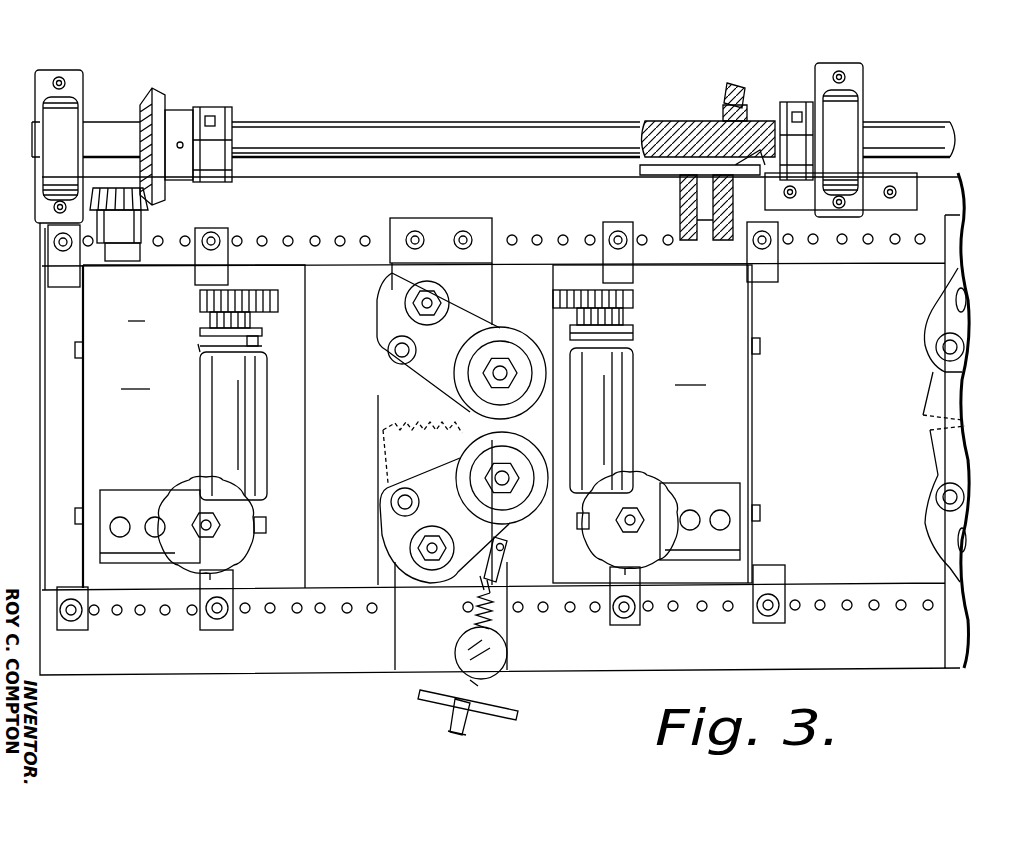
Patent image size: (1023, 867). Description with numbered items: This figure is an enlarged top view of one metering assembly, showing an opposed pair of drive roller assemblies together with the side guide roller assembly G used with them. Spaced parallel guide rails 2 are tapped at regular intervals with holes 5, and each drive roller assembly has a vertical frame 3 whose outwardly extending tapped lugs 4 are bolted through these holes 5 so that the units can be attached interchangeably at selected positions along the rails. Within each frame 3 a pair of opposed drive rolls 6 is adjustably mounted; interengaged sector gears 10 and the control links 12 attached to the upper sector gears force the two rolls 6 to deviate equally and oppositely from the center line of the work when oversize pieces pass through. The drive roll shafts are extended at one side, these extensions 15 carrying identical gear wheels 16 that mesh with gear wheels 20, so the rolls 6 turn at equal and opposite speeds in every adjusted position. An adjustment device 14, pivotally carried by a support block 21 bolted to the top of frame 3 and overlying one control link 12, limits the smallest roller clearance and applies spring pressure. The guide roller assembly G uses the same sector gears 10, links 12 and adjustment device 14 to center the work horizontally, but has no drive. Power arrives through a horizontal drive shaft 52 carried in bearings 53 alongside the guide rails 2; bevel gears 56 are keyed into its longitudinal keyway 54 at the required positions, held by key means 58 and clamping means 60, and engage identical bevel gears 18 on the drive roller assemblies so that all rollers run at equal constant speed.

The guide rails 2 is at (950, 192).
The vertical frame 3 is at (738, 308).
The tapped lugs 4 is at (212, 234).
The holes 5 is at (312, 236).
The drive rolls 6 is at (250, 416).
The sector gears 10 is at (76, 345).
The control links 12 is at (258, 340).
The adjustment device 14 is at (212, 560).
The shaft extensions 15 is at (252, 332).
The gear wheels 16 is at (262, 314).
The bevel gear 18 is at (150, 202).
The gear wheels 20 is at (243, 300).
The support block 21 is at (128, 500).
The horizontal drive shafts 52 is at (358, 126).
The bearings 53 is at (70, 112).
The keyway 54 is at (657, 120).
The bevel gears 56 is at (158, 96).
The key means 58 is at (683, 178).
The clamping means 60 is at (220, 108).
The guide roller assembly G is at (374, 289).